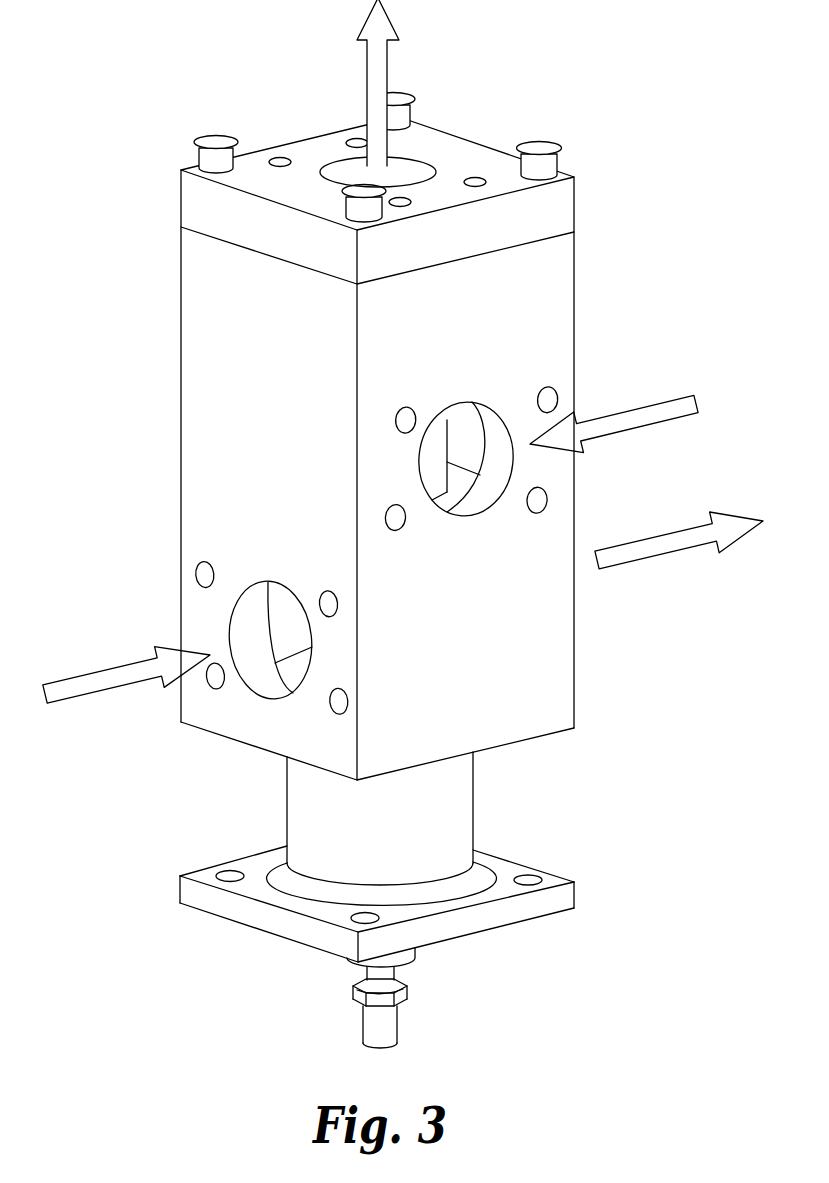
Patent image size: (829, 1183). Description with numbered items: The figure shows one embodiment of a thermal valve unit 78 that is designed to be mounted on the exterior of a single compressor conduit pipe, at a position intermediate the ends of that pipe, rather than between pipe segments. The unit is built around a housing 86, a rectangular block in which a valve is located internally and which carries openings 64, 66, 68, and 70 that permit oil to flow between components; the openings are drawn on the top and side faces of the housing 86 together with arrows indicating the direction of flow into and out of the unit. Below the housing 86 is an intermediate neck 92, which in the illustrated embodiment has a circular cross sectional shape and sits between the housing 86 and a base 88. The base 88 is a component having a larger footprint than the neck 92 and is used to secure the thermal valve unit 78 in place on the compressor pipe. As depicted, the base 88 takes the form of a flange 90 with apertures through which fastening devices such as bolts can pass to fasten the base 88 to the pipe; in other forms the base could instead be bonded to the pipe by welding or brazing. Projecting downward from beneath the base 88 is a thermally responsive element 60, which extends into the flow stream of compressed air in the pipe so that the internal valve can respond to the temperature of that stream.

The thermally responsive element 60 is at (398, 1022).
The opening 64 is at (367, 102).
The opening 66 is at (643, 402).
The opening 68 is at (93, 663).
The opening 70 is at (668, 554).
The thermal valve unit 78 is at (630, 257).
The housing 86 is at (181, 332).
The base 88 is at (515, 857).
The flange 90 is at (258, 865).
The intermediate neck 92 is at (475, 798).